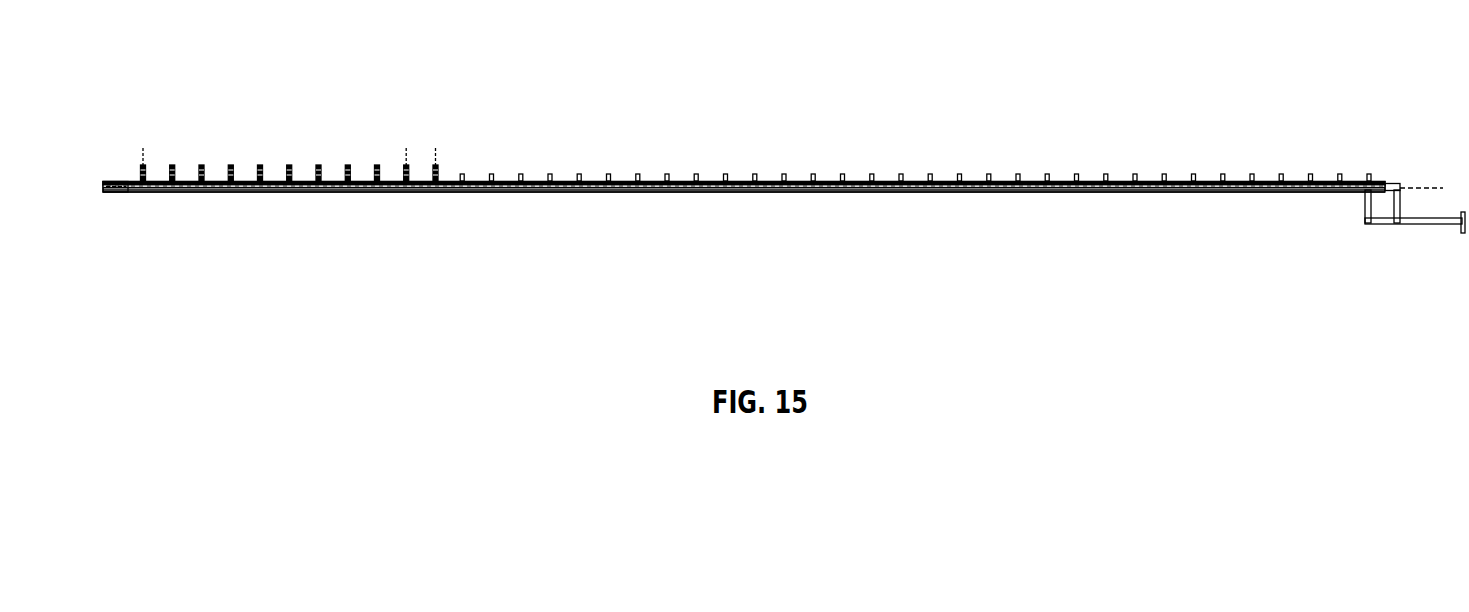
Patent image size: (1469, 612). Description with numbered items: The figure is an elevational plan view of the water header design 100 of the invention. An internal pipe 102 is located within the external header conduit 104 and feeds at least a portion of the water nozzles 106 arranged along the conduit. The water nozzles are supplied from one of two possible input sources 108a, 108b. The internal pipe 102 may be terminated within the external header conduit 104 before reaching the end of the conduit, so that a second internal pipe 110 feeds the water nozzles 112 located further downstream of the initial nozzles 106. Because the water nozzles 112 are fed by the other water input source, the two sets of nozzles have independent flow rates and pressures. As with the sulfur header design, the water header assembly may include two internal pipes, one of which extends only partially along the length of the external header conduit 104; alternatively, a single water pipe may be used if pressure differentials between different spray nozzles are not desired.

The water header design 100 is at (983, 224).
The internal pipe 102 is at (567, 178).
The external header conduit 104 is at (832, 178).
The water nozzles 106 is at (966, 177).
The input source 108a is at (1354, 220).
The input source 108b is at (1402, 184).
The second internal pipe 110 is at (332, 196).
The water nozzles 112 is at (366, 160).